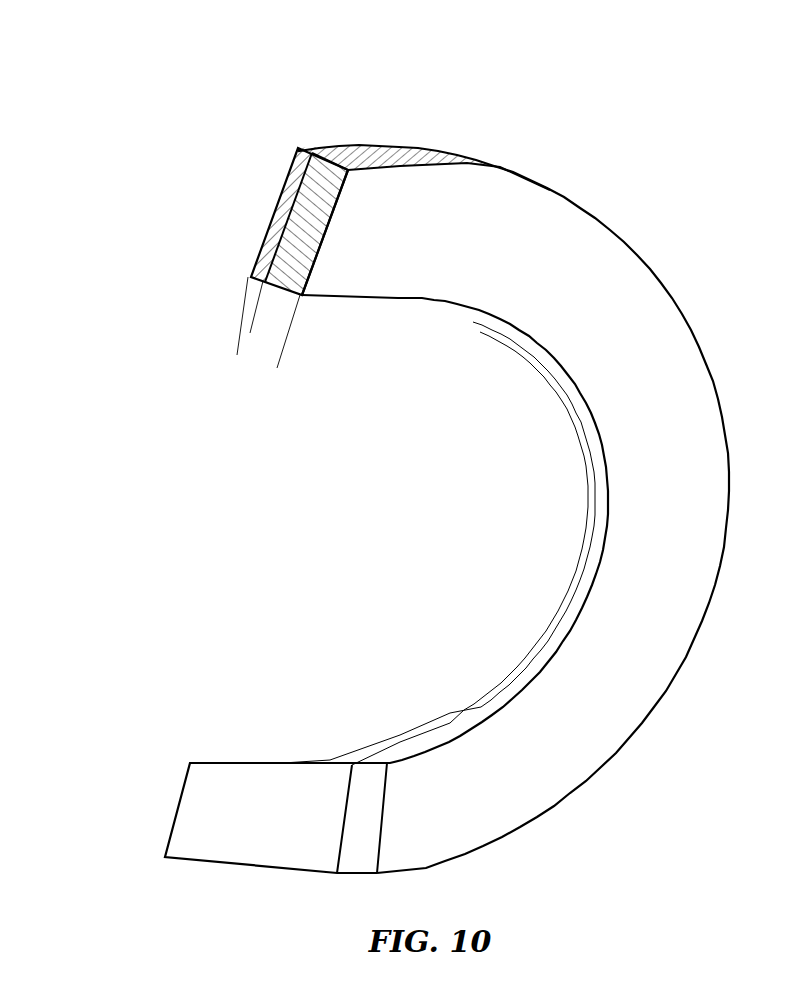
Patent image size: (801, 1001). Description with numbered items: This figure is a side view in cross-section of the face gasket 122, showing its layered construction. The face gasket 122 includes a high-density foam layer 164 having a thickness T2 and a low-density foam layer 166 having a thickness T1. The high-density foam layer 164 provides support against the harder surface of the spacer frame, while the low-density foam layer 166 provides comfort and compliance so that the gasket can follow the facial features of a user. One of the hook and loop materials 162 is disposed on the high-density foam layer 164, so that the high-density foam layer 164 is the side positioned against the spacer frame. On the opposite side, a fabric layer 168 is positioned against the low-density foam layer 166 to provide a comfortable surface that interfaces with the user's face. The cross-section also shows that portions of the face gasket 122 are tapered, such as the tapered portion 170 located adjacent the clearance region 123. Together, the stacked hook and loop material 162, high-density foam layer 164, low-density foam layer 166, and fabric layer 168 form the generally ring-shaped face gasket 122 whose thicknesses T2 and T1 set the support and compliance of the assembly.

The face gasket 122 is at (650, 213).
The clearance region 123 is at (158, 770).
The hook and loop material 162 is at (277, 182).
The high-density foam layer 164 is at (307, 143).
The low-density foam layer 166 is at (353, 162).
The fabric layer 168 is at (450, 210).
The tapered portion 170 is at (307, 750).
The thickness T1 is at (190, 320).
The thickness T2 is at (287, 317).